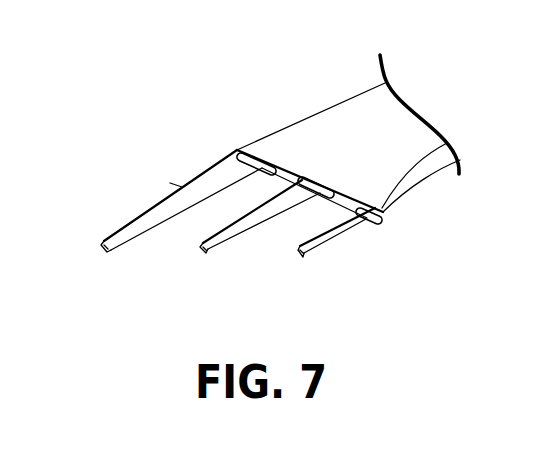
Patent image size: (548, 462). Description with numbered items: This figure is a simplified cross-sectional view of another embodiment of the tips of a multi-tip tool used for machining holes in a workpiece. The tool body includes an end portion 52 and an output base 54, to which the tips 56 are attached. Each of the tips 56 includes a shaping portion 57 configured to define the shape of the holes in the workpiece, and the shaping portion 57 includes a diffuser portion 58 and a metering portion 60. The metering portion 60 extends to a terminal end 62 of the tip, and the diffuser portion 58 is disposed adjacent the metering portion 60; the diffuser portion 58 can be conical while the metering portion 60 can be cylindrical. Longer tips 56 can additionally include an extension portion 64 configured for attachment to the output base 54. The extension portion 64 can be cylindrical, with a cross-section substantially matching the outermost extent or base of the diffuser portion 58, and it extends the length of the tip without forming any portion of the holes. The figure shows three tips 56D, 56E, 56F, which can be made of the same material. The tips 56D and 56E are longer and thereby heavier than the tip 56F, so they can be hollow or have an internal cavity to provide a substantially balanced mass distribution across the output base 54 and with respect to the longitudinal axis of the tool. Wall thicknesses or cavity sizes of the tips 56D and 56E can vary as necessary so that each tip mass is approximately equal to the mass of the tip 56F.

The end portion 52 is at (400, 152).
The output base 54 is at (342, 197).
The tips 56 is at (264, 188).
The tip 56D is at (246, 163).
The tip 56E is at (307, 188).
The tip 56F is at (367, 218).
The shaping portion 57 is at (225, 222).
The diffuser portion 58 is at (168, 209).
The metering portion 60 is at (128, 248).
The terminal end 62 is at (305, 247).
The extension portion 64 is at (182, 187).